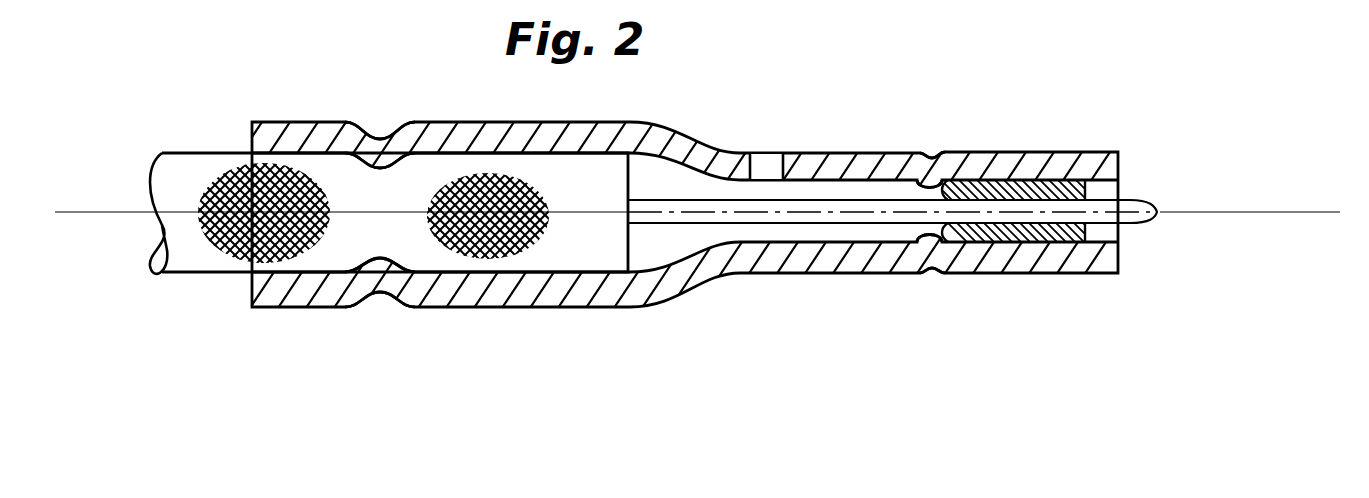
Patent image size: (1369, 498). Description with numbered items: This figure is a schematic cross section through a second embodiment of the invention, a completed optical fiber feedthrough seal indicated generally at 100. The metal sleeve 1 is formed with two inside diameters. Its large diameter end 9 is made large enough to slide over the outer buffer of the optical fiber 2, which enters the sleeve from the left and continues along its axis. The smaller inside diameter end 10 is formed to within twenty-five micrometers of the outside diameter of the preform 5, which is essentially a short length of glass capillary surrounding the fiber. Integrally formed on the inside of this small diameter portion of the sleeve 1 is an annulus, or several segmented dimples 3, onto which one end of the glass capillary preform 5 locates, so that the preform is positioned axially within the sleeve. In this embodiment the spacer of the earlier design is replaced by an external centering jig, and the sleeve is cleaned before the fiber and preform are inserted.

The connector assembly 100 is at (628, 105).
The metal sleeve 1 is at (682, 292).
The optical fiber 2 is at (225, 319).
The large diameter end 9 is at (468, 120).
The smaller inside diameter end 10 is at (843, 152).
The segmented dimples 3 is at (925, 152).
The preform 5 is at (1037, 183).